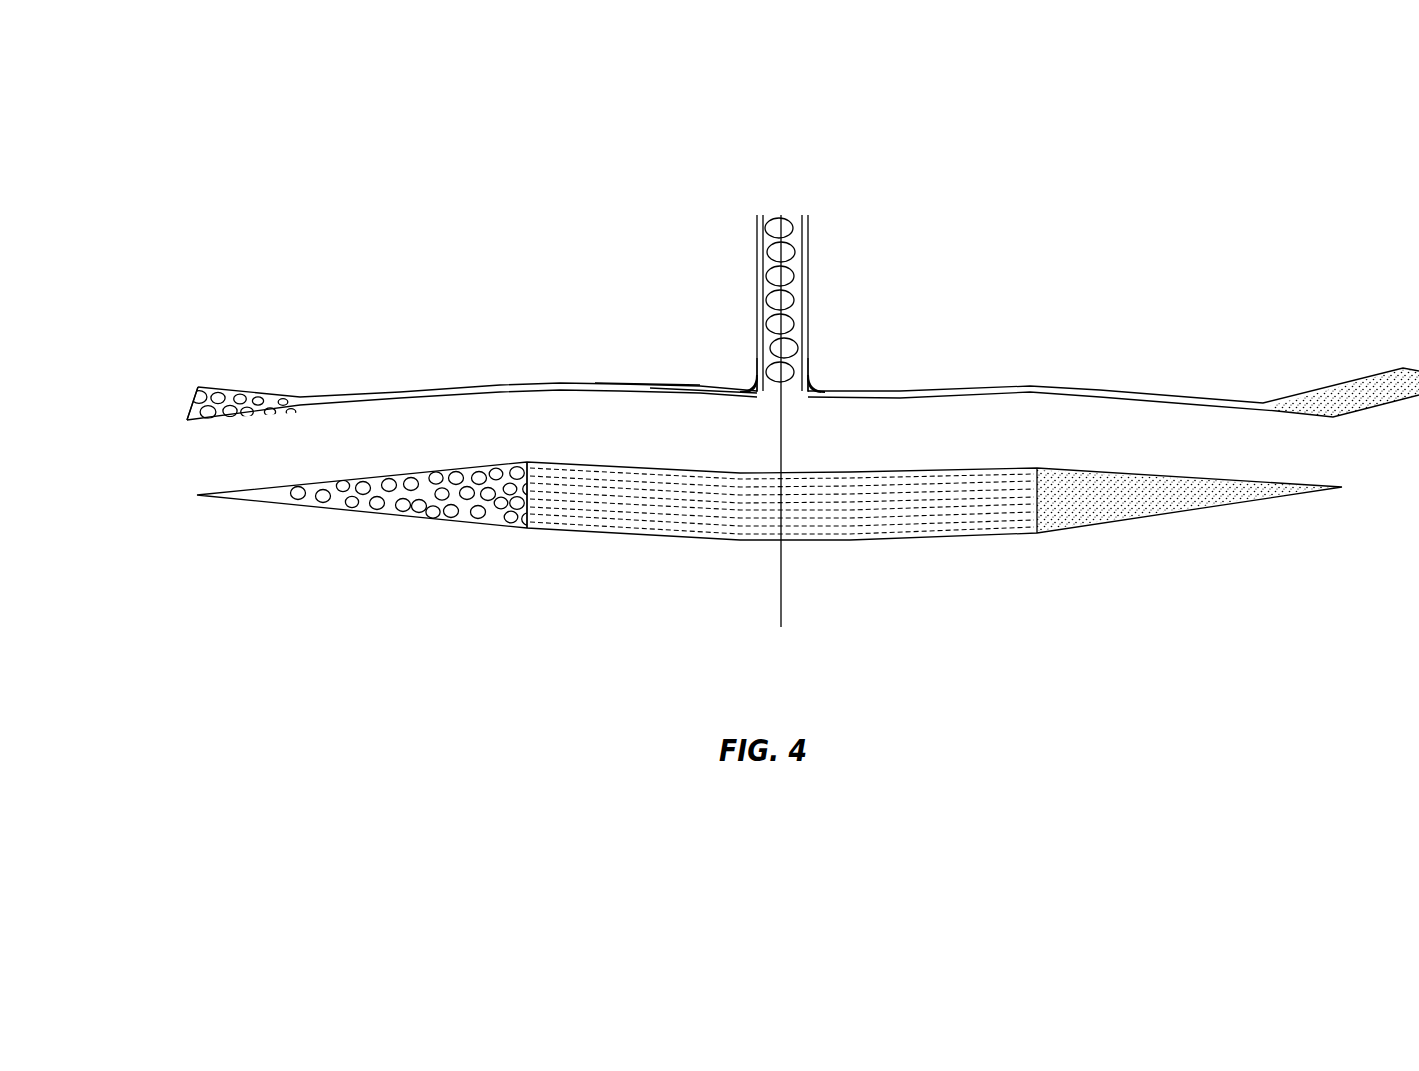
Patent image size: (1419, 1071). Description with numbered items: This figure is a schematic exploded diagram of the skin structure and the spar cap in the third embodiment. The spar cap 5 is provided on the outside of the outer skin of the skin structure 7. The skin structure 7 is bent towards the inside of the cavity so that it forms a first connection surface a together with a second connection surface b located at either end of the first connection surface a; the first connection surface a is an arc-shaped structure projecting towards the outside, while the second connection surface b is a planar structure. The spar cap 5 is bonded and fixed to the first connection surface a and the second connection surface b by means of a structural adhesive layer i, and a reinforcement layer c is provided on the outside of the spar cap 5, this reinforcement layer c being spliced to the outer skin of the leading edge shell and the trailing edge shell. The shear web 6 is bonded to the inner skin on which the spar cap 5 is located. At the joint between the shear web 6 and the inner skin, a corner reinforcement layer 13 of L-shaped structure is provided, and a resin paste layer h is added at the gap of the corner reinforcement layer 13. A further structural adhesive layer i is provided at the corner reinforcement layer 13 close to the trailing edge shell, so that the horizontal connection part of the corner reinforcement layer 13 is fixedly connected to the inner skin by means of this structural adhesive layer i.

The spar cap 5 is at (880, 545).
The shear web 6 is at (792, 220).
The skin structure 7 is at (420, 380).
The corner reinforcement layer 13 is at (742, 338).
The first connection surface a is at (677, 393).
The second connection surface b is at (270, 413).
The reinforcement layer c is at (525, 530).
The resin paste layer h is at (743, 380).
The structural adhesive layer i is at (600, 383).